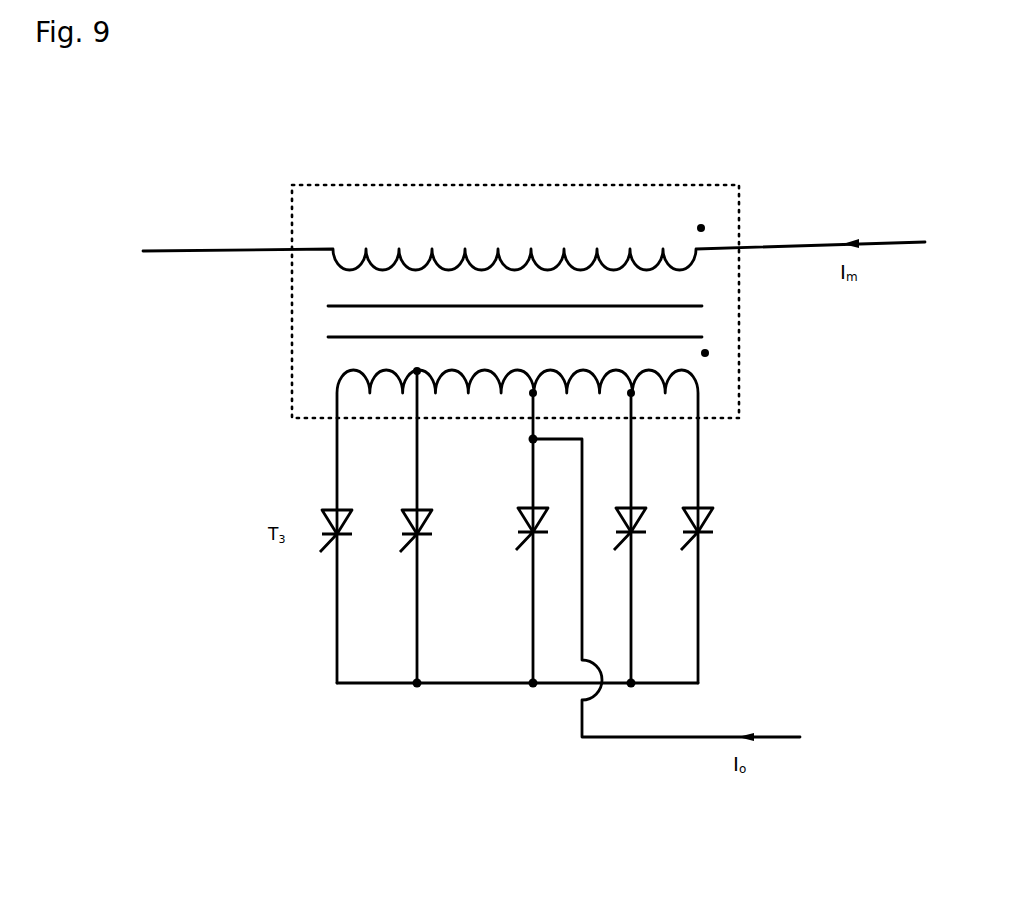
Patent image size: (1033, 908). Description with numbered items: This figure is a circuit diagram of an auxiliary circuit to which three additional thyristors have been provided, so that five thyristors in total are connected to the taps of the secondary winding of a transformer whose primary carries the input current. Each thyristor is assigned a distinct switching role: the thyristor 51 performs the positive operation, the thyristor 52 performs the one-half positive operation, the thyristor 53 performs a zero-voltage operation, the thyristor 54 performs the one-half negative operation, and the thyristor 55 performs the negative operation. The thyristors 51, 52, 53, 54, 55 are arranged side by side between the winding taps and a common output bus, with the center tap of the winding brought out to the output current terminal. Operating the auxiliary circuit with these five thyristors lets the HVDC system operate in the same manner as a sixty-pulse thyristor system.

The thyristor 51 is at (321, 547).
The thyristor 52 is at (401, 547).
The thyristor 53 is at (517, 545).
The thyristor 54 is at (615, 545).
The thyristor 55 is at (682, 545).